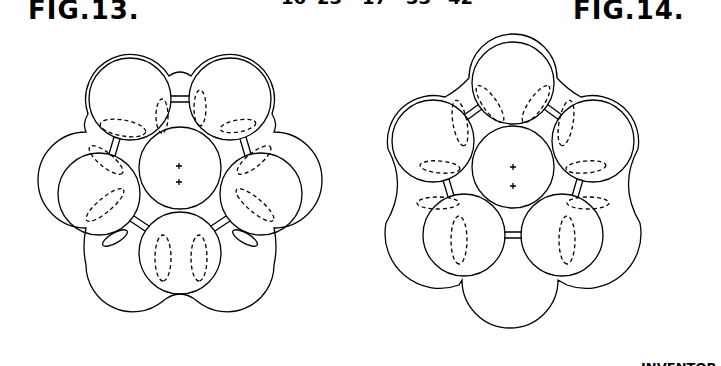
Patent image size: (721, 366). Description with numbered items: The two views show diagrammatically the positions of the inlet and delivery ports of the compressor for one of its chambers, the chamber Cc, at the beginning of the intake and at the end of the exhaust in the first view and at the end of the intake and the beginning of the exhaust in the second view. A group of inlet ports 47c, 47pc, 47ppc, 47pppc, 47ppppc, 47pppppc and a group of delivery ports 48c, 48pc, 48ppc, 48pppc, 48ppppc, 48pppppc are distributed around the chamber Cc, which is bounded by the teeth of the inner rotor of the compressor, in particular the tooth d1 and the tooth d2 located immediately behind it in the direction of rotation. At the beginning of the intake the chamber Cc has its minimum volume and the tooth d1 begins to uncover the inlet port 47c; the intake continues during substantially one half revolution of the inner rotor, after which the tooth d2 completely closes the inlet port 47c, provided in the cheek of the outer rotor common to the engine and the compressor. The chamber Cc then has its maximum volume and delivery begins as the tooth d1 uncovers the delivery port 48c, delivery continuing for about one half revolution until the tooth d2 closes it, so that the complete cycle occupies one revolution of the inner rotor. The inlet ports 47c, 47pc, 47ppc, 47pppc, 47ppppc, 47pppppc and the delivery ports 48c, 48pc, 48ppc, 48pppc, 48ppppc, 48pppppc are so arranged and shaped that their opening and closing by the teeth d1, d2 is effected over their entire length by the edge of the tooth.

In FIG. 13, the inlet port 47c is at (196, 97).
In FIG. 14, the inlet port 47c is at (548, 268).
In FIG. 13, the inlet port 47pc is at (258, 162).
In FIG. 14, the inlet port 47pc is at (457, 261).
In FIG. 13, the inlet port 47ppc is at (250, 241).
In FIG. 14, the inlet port 47ppc is at (430, 165).
In FIG. 13, the inlet port 47pppc is at (158, 259).
In FIG. 14, the inlet port 47pppc is at (478, 92).
In FIG. 13, the inlet port 47ppppc is at (105, 206).
In FIG. 14, the inlet port 47ppppc is at (562, 112).
In FIG. 13, the inlet port 47pppppc is at (118, 122).
In FIG. 14, the inlet port 47pppppc is at (593, 200).
In FIG. 13, the delivery port 48c is at (255, 124).
In FIG. 14, the delivery port 48c is at (485, 240).
In FIG. 13, the delivery port 48pc is at (258, 208).
In FIG. 14, the delivery port 48pc is at (427, 201).
In FIG. 13, the delivery port 48ppc is at (198, 278).
In FIG. 14, the delivery port 48ppc is at (450, 105).
In FIG. 13, the delivery port 48pppc is at (140, 232).
In FIG. 14, the delivery port 48pppc is at (538, 100).
In FIG. 13, the delivery port 48ppppc is at (100, 155).
In FIG. 14, the delivery port 48ppppc is at (588, 160).
In FIG. 13, the delivery port 48pppppc is at (160, 97).
In FIG. 14, the delivery port 48pppppc is at (578, 245).
In FIG. 13, the chamber Cc is at (180, 78).
In FIG. 14, the chamber Cc is at (516, 308).
In FIG. 13, the tooth of the inner rotor d1 is at (233, 80).
In FIG. 14, the tooth of the inner rotor d1 is at (455, 265).
In FIG. 13, the tooth of the inner rotor d2 is at (115, 92).
In FIG. 14, the tooth of the inner rotor d2 is at (570, 243).